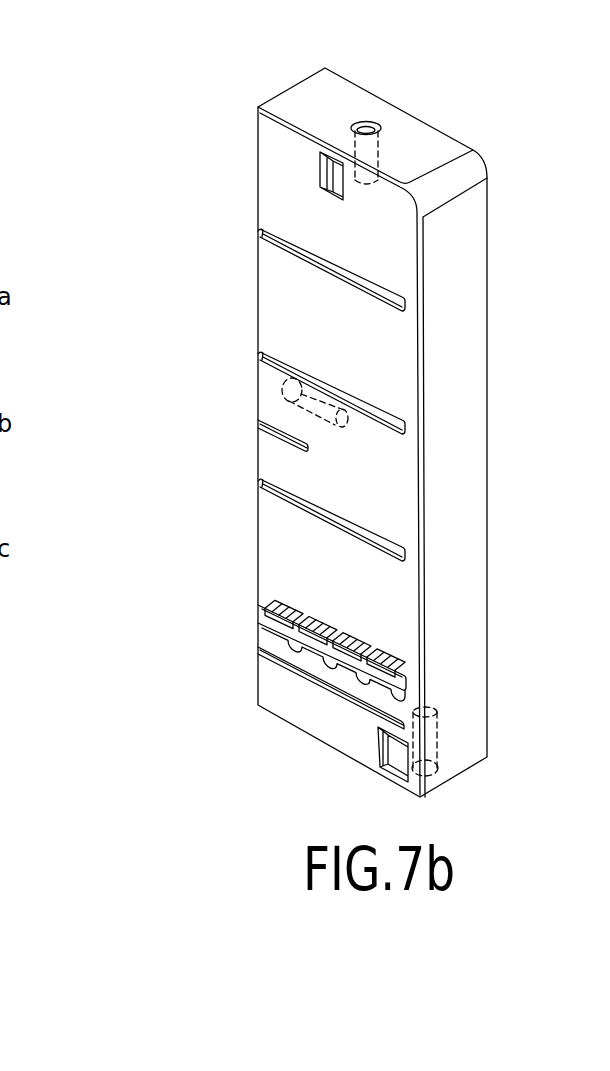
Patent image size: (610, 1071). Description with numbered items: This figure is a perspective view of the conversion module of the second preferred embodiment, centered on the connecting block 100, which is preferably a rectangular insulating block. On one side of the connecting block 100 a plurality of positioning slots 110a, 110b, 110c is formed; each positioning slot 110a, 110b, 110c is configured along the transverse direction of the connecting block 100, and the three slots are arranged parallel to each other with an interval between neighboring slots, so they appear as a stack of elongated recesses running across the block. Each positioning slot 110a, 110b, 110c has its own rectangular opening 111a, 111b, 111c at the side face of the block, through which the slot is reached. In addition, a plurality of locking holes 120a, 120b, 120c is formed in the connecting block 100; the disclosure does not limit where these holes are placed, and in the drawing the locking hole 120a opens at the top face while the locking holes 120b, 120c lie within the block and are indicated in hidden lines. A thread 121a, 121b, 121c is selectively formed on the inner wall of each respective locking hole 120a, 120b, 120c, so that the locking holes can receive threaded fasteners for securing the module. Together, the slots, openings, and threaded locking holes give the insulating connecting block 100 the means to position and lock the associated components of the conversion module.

The connecting block 100 is at (110, 755).
The positioning slot 110a is at (375, 304).
The positioning slot 110b is at (375, 429).
The positioning slot 110c is at (375, 556).
The rectangular opening 111a is at (262, 230).
The rectangular opening 111b is at (262, 353).
The rectangular opening 111c is at (262, 480).
The locking hole 120a is at (383, 128).
The locking hole 120b is at (438, 773).
The locking hole 120c is at (282, 400).
The thread 121a is at (370, 127).
The thread 121b is at (432, 742).
The thread 121c is at (287, 383).